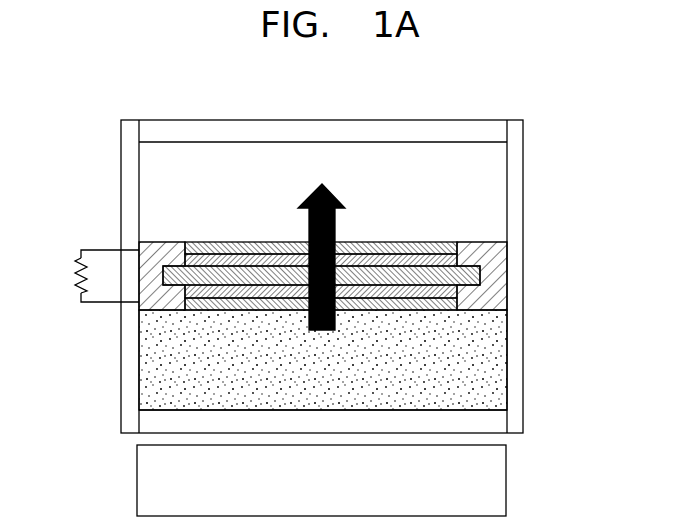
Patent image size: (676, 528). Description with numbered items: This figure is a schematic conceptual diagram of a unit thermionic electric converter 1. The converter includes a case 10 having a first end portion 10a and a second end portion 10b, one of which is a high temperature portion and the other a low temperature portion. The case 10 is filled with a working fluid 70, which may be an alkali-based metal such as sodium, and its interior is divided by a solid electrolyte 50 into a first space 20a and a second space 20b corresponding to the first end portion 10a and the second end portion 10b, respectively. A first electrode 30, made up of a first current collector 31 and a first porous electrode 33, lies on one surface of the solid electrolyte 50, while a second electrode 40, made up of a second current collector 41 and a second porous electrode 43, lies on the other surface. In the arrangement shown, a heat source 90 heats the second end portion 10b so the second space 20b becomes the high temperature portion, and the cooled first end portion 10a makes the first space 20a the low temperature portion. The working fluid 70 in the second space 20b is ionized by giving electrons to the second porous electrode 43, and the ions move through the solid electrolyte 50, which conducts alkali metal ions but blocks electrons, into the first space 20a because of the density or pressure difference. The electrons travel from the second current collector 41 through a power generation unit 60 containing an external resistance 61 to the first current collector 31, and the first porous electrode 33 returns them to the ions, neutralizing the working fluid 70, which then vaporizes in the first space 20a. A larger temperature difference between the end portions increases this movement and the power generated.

The unit thermionic electric converter 1 is at (561, 64).
The case 10 is at (366, 279).
The first end portion 10a is at (473, 120).
The second end portion 10b is at (473, 435).
The first space 20a is at (458, 185).
The second space 20b is at (448, 381).
The first electrode 30 is at (394, 237).
The first current collector 31 is at (458, 245).
The first porous electrode 33 is at (458, 262).
The second electrode 40 is at (394, 316).
The second current collector 41 is at (458, 306).
The second porous electrode 43 is at (458, 291).
The solid electrolyte 50 is at (481, 275).
The power generation unit 60 is at (106, 290).
The external resistance 61 is at (75, 276).
The working fluid 70 is at (467, 363).
The heat source 90 is at (497, 494).